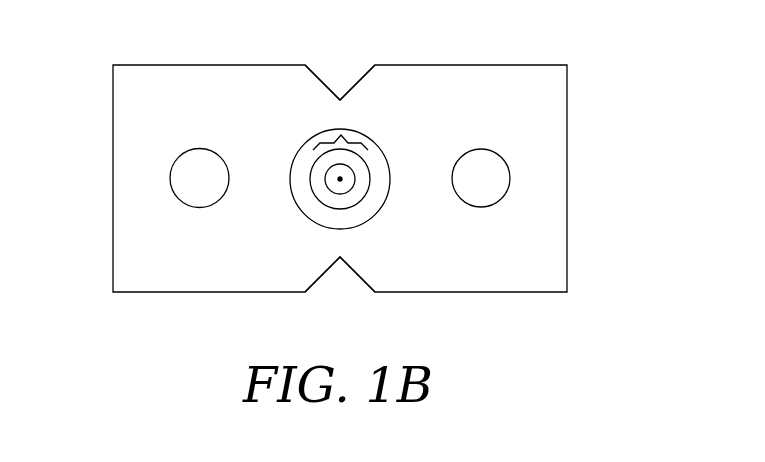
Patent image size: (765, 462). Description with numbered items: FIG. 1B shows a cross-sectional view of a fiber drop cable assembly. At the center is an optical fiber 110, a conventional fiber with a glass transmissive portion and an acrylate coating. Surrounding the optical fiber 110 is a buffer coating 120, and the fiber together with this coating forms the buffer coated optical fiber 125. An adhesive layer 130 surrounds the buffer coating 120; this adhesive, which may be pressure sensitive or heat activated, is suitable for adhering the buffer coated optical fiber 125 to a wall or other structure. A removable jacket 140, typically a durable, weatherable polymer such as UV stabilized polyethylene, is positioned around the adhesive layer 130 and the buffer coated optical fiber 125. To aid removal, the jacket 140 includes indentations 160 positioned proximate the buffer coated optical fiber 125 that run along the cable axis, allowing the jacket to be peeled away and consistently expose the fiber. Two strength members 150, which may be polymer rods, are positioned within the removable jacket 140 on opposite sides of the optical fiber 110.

The optical fiber 110 is at (346, 178).
The buffer coating 120 is at (349, 197).
The buffer coated optical fiber 125 is at (341, 134).
The adhesive layer 130 is at (304, 206).
The removable jacket 140 is at (523, 65).
The strength members 150 is at (170, 180).
The indentation 160 is at (328, 88).